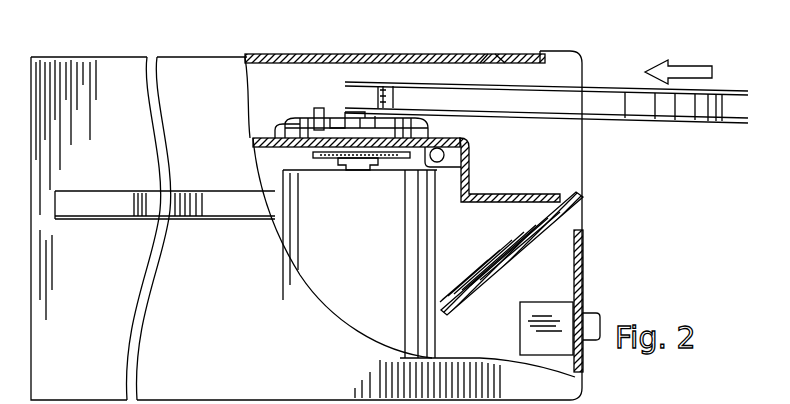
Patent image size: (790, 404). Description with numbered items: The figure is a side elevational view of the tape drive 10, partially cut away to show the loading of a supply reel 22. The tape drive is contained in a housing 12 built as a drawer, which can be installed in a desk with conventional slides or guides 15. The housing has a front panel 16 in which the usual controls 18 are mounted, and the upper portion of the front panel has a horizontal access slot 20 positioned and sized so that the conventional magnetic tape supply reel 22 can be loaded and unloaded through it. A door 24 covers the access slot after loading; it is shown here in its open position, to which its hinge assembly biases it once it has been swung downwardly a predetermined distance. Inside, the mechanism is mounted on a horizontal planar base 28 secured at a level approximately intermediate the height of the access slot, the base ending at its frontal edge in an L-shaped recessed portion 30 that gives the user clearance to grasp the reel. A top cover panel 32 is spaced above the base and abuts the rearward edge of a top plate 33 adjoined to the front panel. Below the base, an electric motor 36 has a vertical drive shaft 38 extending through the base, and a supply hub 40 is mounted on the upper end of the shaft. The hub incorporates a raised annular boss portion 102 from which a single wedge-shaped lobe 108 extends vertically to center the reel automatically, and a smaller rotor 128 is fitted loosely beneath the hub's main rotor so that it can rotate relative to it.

The tape drive 10 is at (202, 52).
The housing 12 is at (135, 62).
The slides or guides 15 is at (241, 210).
The front panel 16 is at (585, 270).
The controls 18 is at (600, 318).
The access slot 20 is at (553, 60).
The supply reel 22 is at (606, 112).
The door 24 is at (497, 277).
The base 28 is at (266, 140).
The L-shaped recessed portion 30 is at (490, 196).
The top cover panel 32 is at (410, 54).
The top plate 33 is at (495, 54).
The electric motor 36 is at (308, 262).
The drive shaft 38 is at (356, 170).
The supply hub 40 is at (336, 98).
The annular boss portion 102 is at (290, 128).
The wedge-shaped lobe 108 is at (316, 118).
The smaller rotor 128 is at (398, 157).